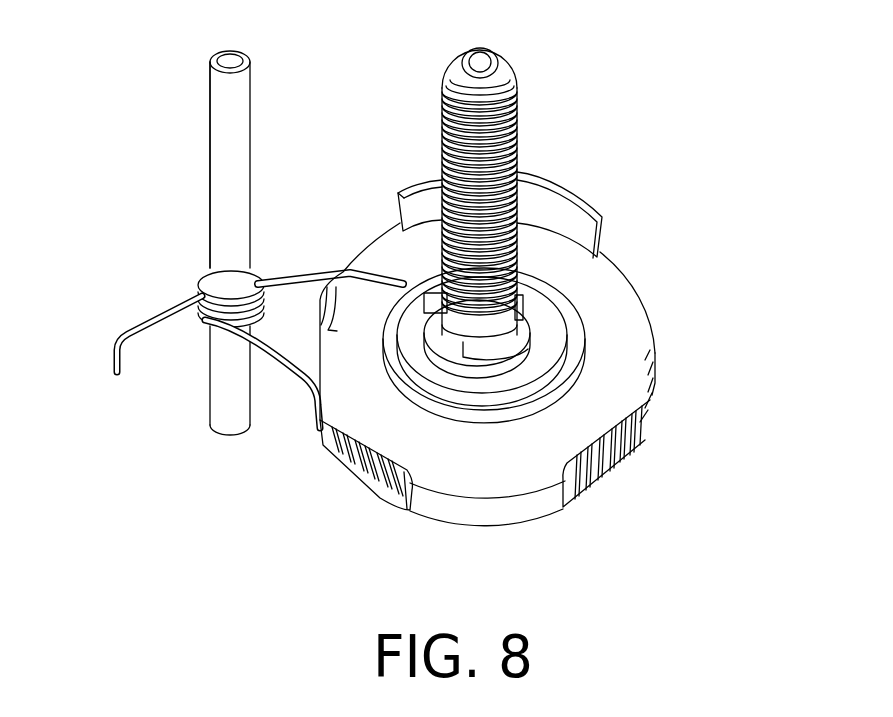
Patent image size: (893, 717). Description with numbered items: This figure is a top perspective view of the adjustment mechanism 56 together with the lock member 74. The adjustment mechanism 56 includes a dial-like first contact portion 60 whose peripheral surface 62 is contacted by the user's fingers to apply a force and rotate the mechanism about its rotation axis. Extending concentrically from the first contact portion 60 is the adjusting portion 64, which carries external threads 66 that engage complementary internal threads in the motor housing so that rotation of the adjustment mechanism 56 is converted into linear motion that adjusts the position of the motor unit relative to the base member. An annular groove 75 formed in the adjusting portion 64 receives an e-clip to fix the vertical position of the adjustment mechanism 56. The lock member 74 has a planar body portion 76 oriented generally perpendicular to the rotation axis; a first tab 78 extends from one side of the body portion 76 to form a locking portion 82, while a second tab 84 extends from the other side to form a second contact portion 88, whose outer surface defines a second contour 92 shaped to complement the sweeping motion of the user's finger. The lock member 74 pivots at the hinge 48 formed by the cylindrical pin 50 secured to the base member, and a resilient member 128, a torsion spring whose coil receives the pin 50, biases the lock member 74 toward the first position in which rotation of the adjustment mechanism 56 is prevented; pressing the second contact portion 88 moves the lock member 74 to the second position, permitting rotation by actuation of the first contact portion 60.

The hinge 48 is at (204, 157).
The cylindrical pin 50 is at (212, 199).
The resilient member 128 is at (168, 290).
The external threads 66 is at (442, 122).
The adjusting portion 64 is at (560, 122).
The second tab 84 is at (425, 179).
The second contact portion 88 is at (395, 184).
The second contour 92 is at (582, 196).
The lock member 74 is at (652, 307).
The peripheral surface 62 is at (653, 400).
The adjustment mechanism 56 is at (660, 439).
The first contact portion 60 is at (352, 494).
The body portion 76 is at (621, 465).
The locking portion 82 is at (442, 512).
The first tab 78 is at (502, 514).
The annular groove 75 is at (447, 343).